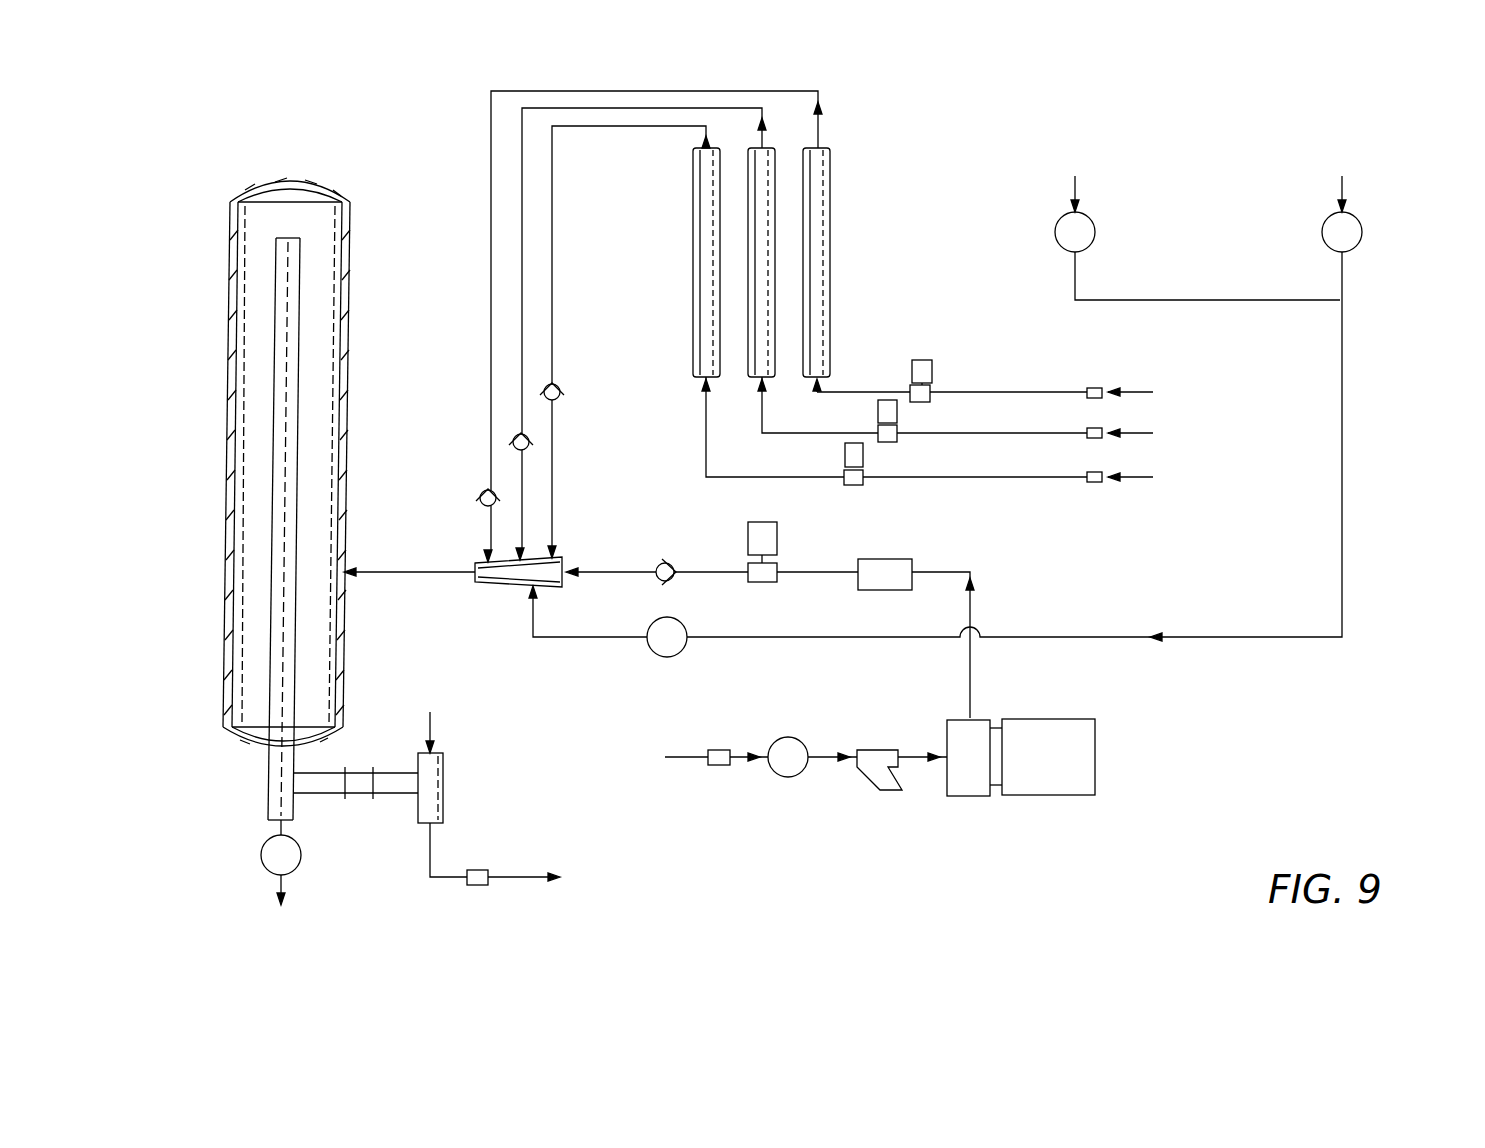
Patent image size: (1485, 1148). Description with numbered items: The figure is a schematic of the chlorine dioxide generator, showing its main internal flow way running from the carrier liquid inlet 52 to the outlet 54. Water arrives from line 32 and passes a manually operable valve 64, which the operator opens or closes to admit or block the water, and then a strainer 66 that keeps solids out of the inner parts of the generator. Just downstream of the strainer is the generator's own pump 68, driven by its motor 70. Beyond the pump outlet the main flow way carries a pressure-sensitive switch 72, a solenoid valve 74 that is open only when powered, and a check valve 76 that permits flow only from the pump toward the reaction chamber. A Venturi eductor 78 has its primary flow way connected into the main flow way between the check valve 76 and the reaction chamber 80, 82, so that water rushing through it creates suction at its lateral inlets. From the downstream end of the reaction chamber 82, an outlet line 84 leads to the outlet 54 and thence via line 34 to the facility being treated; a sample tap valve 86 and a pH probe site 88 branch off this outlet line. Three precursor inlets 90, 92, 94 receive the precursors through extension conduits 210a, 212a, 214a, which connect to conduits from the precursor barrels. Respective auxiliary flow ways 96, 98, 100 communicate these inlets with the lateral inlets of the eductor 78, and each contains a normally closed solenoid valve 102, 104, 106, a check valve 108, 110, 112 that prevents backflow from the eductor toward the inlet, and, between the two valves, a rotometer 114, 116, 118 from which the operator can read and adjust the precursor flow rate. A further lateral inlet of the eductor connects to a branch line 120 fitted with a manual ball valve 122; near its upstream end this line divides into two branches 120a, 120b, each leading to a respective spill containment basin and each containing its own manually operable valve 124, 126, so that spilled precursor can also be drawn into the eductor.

The line 32 is at (690, 752).
The line 34 is at (525, 875).
The main or carrier liquid inlet 52 is at (720, 768).
The outlet 54 is at (480, 887).
The manually operable valve 64 is at (788, 737).
The strainer 66 is at (875, 750).
The pump 68 is at (975, 797).
The motor 70 is at (1095, 745).
The pressure-sensitive switch 72 is at (895, 558).
The solenoid valve 74 is at (778, 540).
The check valve 76 is at (660, 560).
The Venturi eductor 78 is at (486, 588).
The reaction chamber 80 is at (282, 350).
The reaction chamber 82 is at (229, 232).
The outlet line 84 is at (392, 798).
The sample tap valve 86 is at (262, 855).
The pH probe site 88 is at (445, 765).
The precursor inlet 90 is at (1090, 388).
The precursor inlet 92 is at (1090, 430).
The precursor inlet 94 is at (1092, 482).
The auxiliary flow way 96 is at (790, 91).
The auxiliary flow way 98 is at (650, 110).
The auxiliary flow way 100 is at (601, 128).
The normally closed solenoid valve 102 is at (930, 370).
The normally closed solenoid valve 104 is at (898, 410).
The normally closed solenoid valve 106 is at (864, 455).
The check valve 108 is at (480, 500).
The check valve 110 is at (513, 448).
The check valve 112 is at (560, 400).
The rotometer 114 is at (831, 250).
The rotometer 116 is at (775, 188).
The rotometer 118 is at (693, 245).
The branch line 120 is at (598, 640).
The branch 120a is at (1345, 185).
The branch 120b is at (1068, 275).
The manual ball valve 122 is at (683, 650).
The manually operable valve 124 is at (1362, 240).
The manually operable valve 126 is at (1095, 225).
The extension conduit 210a is at (1135, 392).
The extension conduit 212a is at (1135, 433).
The extension conduit 214a is at (1138, 480).